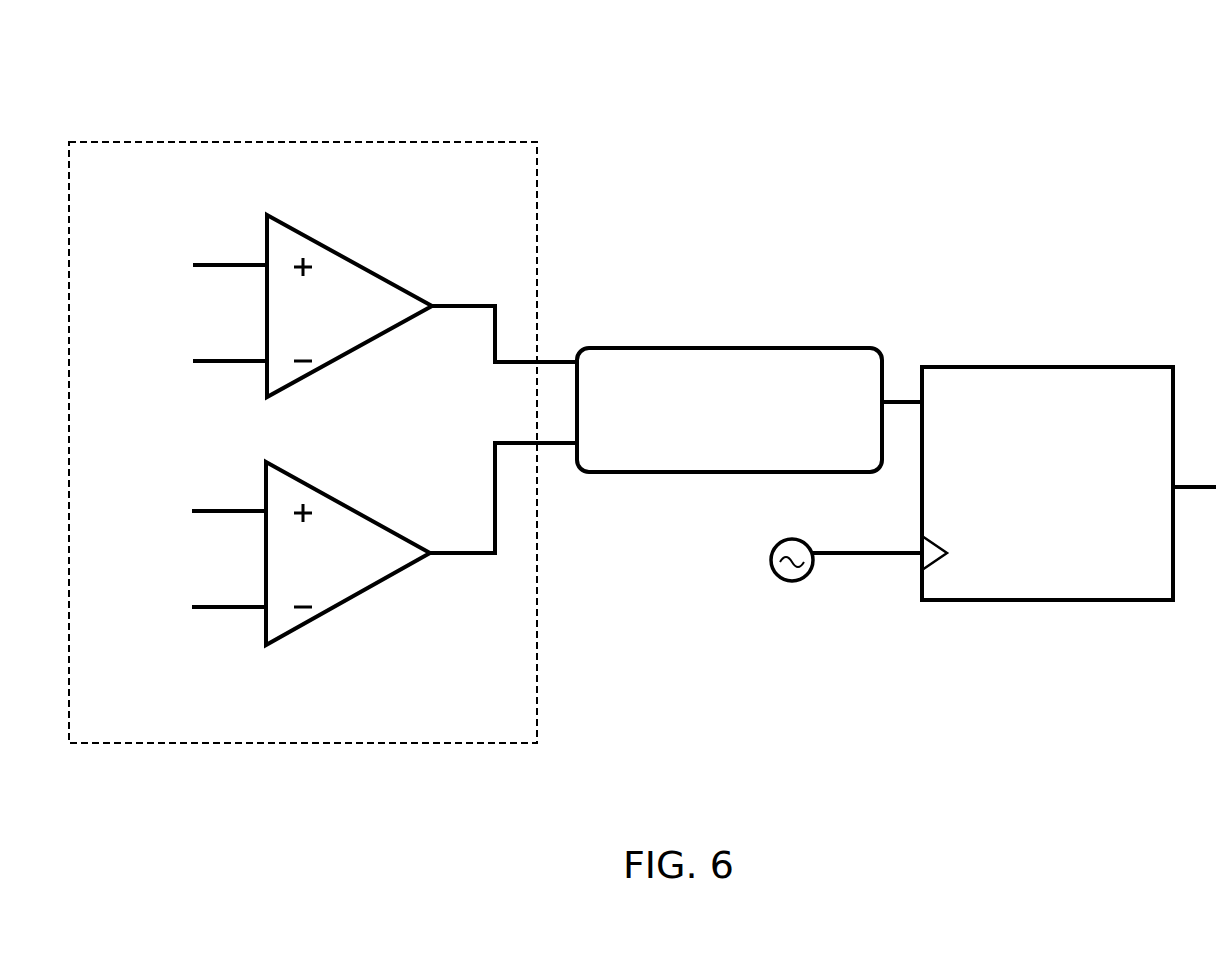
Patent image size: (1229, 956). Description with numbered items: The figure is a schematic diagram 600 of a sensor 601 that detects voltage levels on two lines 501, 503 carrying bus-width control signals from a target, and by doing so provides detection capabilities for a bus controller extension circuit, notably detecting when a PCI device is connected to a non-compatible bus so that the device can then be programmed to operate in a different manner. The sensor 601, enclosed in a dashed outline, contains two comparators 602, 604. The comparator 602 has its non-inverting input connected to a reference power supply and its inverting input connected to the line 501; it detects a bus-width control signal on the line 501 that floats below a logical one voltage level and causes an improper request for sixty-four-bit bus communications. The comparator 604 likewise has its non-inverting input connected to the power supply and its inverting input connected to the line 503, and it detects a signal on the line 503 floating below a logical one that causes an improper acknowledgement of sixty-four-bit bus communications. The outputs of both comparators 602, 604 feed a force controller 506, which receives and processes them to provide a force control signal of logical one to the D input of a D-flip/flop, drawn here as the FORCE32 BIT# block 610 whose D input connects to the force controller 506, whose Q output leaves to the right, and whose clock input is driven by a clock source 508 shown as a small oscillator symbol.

The schematic diagram 600 is at (703, 128).
The sensor 601 is at (330, 140).
The comparator 602 is at (349, 252).
The comparator 604 is at (351, 606).
The line 501 is at (205, 364).
The line 503 is at (205, 612).
The force controller 506 is at (731, 345).
The clock signal source 508 is at (792, 586).
The FORCE32 BIT# flip-flop 610 is at (1051, 364).